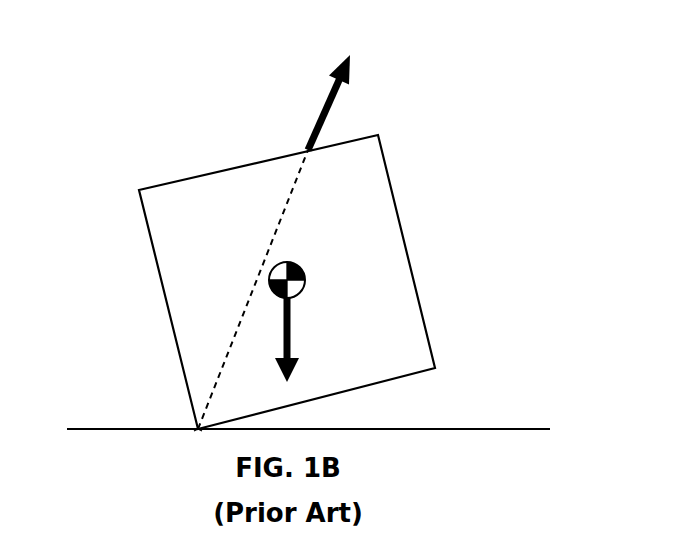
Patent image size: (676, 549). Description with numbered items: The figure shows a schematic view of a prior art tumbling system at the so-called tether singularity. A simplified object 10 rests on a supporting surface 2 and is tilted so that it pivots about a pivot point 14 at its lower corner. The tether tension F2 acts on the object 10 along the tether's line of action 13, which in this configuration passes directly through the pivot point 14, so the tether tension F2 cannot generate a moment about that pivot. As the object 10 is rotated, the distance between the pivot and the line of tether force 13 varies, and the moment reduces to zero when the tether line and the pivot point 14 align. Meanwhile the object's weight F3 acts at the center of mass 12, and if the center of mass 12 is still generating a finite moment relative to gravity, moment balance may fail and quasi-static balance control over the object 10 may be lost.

The supporting surface 2 is at (110, 428).
The simplified object 10 is at (156, 196).
The center of mass 12 is at (306, 276).
The tether's line of action 13 is at (275, 198).
The pivot point 14 is at (198, 436).
The tether tension F2 is at (338, 87).
The object's weight F3 is at (290, 320).